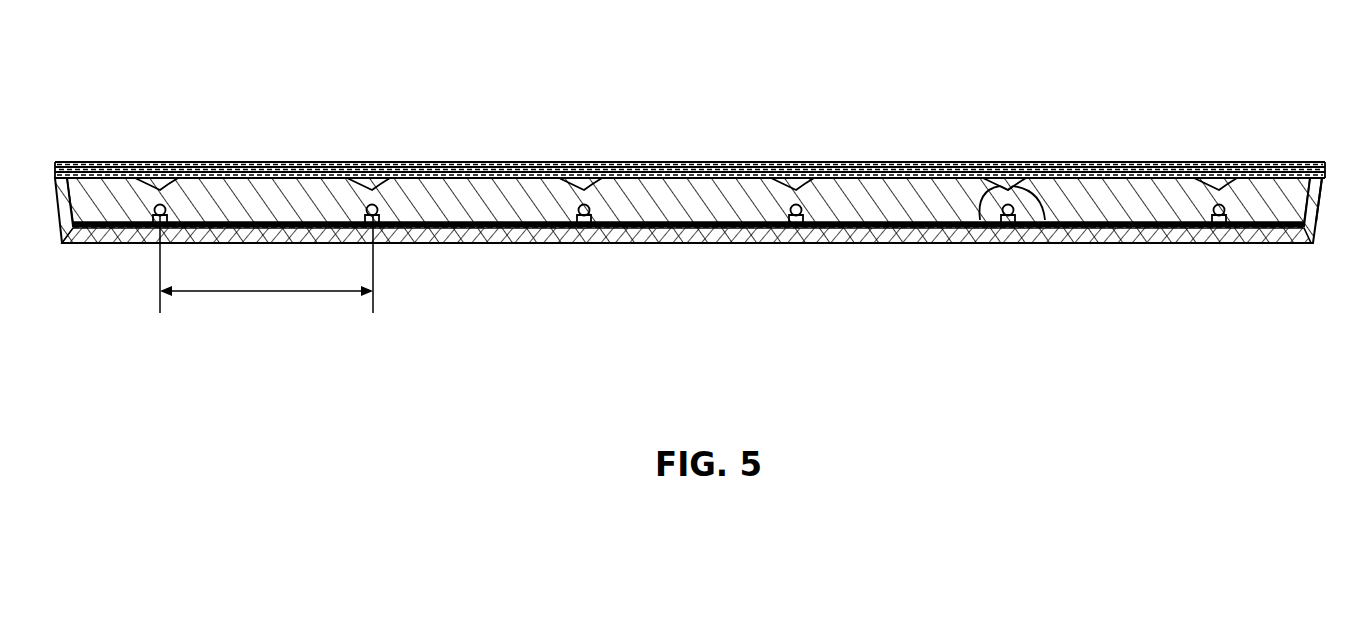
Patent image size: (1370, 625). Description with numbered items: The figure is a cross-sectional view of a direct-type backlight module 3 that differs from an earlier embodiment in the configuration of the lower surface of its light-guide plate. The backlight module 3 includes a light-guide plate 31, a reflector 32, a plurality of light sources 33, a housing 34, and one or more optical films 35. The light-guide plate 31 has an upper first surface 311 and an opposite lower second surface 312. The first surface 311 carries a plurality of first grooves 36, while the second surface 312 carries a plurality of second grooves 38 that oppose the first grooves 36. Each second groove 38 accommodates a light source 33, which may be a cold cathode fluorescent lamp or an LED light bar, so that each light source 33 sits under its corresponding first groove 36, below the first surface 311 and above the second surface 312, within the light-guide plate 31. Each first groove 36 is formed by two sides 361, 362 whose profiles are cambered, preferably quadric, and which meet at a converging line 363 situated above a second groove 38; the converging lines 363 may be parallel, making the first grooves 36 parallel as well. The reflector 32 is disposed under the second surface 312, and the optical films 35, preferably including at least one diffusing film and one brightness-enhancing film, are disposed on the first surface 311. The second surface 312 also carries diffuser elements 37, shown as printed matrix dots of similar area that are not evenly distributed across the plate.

The direct-type backlight module 3 is at (1197, 109).
The light-guide plate 31 is at (1319, 226).
The first surface 311 is at (1276, 168).
The second surface 312 is at (1250, 238).
The reflector 32 is at (1160, 237).
The light source 33 is at (1008, 217).
The housing 34 is at (1218, 236).
The optical films 35 is at (1327, 162).
The first groove 36 is at (1010, 177).
The side 361 is at (990, 222).
The side 362 is at (1048, 218).
The converging line 363 is at (1022, 216).
The diffuser elements 37 is at (1118, 240).
The second groove 38 is at (1210, 234).